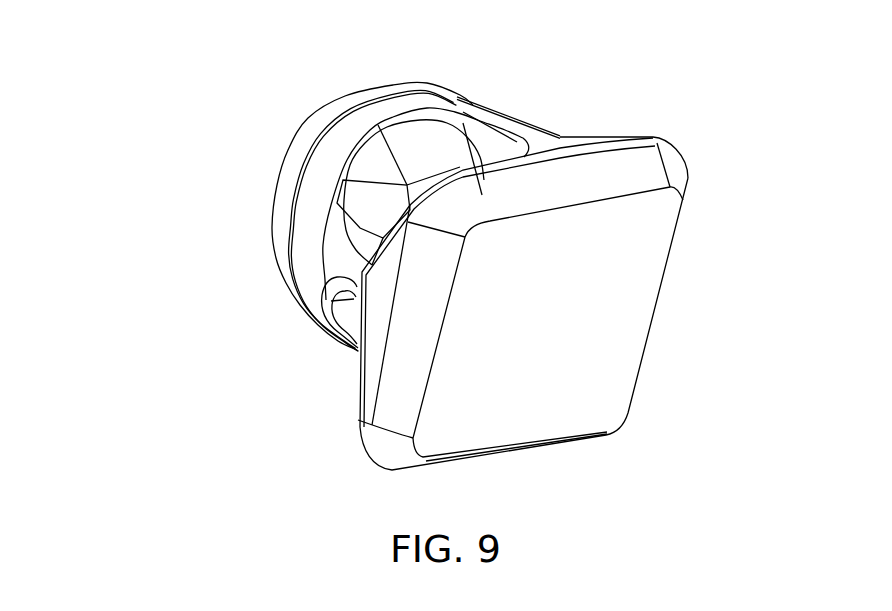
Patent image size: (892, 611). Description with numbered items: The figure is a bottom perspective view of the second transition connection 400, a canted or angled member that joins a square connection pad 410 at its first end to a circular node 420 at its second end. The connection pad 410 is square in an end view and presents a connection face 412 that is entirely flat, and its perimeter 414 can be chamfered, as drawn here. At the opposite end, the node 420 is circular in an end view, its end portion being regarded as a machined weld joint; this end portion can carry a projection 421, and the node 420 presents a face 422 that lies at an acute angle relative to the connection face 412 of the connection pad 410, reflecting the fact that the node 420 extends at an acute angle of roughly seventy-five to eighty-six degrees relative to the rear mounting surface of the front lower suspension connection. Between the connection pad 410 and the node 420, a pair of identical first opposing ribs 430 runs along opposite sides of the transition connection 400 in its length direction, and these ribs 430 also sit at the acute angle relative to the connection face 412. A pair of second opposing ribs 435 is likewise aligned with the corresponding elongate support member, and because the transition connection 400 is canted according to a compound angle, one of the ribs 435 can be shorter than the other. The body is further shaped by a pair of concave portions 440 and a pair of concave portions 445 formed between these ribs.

The transition connection 400 is at (198, 73).
The connection pad 410 is at (550, 150).
The connection face 412 is at (604, 287).
The perimeter 414 is at (677, 160).
The node 420 is at (370, 88).
The projection 421 is at (283, 230).
The face 422 is at (283, 177).
The ribs 430 is at (343, 262).
The ribs 435 is at (474, 108).
The concave portions 440 is at (352, 367).
The concave portions 445 is at (383, 153).